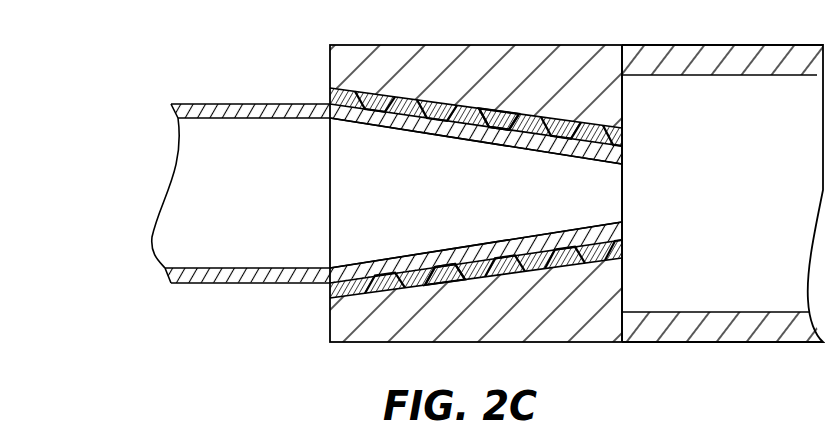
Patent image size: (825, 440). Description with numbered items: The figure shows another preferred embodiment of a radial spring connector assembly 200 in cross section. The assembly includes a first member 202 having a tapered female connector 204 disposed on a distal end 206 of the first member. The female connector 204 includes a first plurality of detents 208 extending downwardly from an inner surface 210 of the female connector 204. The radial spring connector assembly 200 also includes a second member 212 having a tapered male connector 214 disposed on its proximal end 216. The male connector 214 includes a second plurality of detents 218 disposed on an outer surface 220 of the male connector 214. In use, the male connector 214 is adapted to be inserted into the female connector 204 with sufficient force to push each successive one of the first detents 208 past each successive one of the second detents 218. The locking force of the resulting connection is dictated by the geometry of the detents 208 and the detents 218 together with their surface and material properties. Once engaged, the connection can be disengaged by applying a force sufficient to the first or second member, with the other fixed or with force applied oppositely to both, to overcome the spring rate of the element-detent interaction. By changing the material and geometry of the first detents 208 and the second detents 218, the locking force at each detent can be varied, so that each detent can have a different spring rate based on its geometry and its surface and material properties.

The radial spring connector assembly 200 is at (124, 157).
The first member 202 is at (754, 201).
The tapered female connector 204 is at (586, 311).
The distal end 206 is at (622, 192).
The first plurality of detents 208 is at (385, 287).
The inner surface 210 is at (470, 112).
The second member 212 is at (264, 202).
The tapered male connector 214 is at (502, 204).
The proximal end 216 is at (330, 232).
The second plurality of detents 218 is at (468, 118).
The outer surface 220 is at (470, 260).